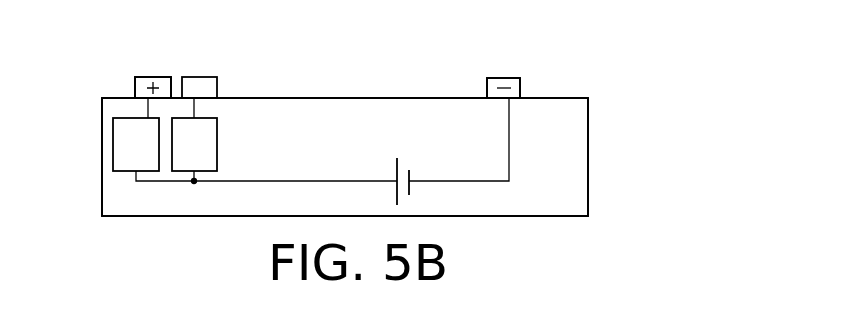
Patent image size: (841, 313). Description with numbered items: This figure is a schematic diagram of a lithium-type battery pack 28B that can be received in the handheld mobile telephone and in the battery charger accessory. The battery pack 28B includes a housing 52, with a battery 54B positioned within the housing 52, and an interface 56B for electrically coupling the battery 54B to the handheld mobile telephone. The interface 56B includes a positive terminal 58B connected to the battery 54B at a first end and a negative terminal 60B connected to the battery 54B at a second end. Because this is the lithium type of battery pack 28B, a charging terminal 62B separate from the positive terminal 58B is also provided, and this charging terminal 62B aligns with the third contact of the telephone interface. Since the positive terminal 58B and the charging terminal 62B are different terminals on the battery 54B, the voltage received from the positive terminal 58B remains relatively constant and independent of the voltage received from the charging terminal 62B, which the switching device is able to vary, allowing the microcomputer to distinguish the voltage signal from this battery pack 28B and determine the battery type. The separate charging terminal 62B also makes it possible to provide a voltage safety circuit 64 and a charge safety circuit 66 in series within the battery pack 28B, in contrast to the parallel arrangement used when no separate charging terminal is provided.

The battery pack 28B is at (599, 133).
The housing 52 is at (588, 170).
The battery 54B is at (410, 158).
The interface 56B is at (452, 85).
The positive terminal 58B is at (143, 80).
The negative terminal 60B is at (499, 82).
The charging terminal 62B is at (191, 83).
The voltage safety circuit 64 is at (122, 133).
The charge safety circuit 66 is at (212, 157).